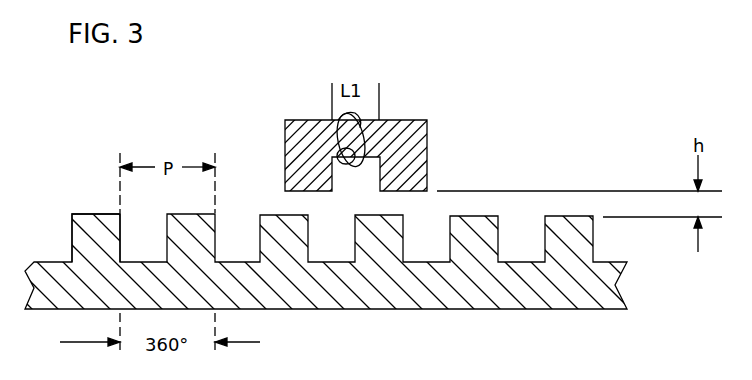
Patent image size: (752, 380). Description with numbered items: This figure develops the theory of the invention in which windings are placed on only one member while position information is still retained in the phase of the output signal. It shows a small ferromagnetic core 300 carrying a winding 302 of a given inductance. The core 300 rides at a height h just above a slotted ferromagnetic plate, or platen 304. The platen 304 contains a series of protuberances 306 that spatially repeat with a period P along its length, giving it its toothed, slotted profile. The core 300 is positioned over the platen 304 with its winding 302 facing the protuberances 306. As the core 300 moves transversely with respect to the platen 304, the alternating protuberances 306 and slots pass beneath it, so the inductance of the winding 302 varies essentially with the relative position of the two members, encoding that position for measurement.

The ferromagnetic core 300 is at (402, 120).
The winding 302 is at (328, 98).
The platen 304 is at (618, 286).
The protuberances 306 is at (98, 213).